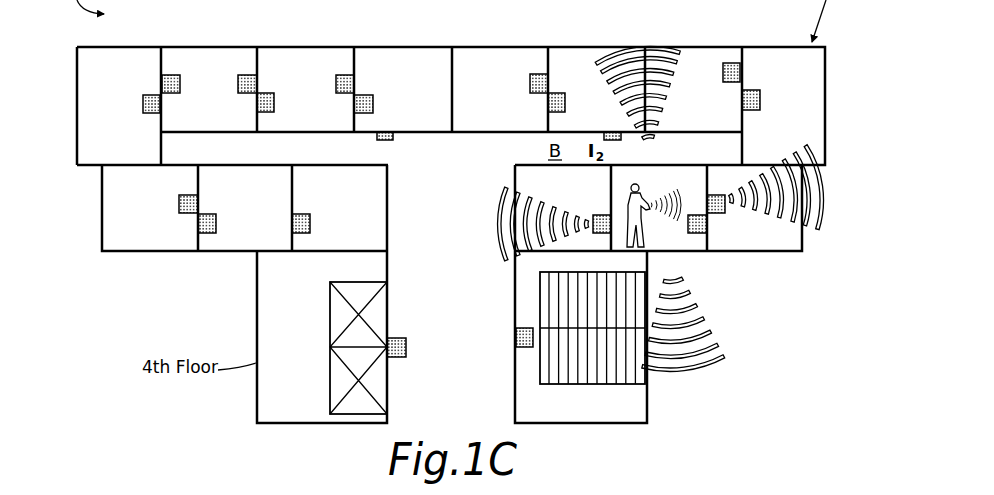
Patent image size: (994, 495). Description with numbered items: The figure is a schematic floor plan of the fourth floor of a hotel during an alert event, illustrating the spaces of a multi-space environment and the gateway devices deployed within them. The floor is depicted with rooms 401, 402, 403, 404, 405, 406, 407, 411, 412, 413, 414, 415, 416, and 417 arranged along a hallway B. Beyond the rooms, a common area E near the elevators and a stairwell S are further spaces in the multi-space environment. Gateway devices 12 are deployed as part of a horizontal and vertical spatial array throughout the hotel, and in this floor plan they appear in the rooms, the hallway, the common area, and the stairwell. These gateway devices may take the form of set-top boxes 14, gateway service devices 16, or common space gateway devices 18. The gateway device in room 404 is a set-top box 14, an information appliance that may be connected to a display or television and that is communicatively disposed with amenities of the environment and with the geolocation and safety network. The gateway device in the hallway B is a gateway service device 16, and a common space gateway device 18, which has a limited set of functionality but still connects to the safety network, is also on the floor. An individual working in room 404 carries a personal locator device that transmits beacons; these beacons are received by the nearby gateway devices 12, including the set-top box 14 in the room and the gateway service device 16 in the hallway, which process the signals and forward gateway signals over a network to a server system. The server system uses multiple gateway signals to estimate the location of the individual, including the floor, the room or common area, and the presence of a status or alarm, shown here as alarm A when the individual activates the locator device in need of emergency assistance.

The gateway device 12 is at (451, 188).
The set-top box 14 is at (541, 173).
The gateway service device 16 is at (543, 273).
The common space gateway device 18 is at (516, 343).
The alarm A is at (683, 367).
The hallway B is at (672, 197).
The common area E is at (460, 395).
The stairwell S is at (574, 364).
The room 401 is at (500, 89).
The room 402 is at (563, 208).
The room 403 is at (596, 89).
The room 404 is at (659, 208).
The room 405 is at (693, 89).
The room 406 is at (754, 208).
The room 407 is at (783, 106).
The room 411 is at (403, 89).
The room 412 is at (339, 208).
The room 413 is at (305, 89).
The room 414 is at (245, 208).
The room 415 is at (209, 89).
The room 416 is at (150, 208).
The room 417 is at (119, 106).